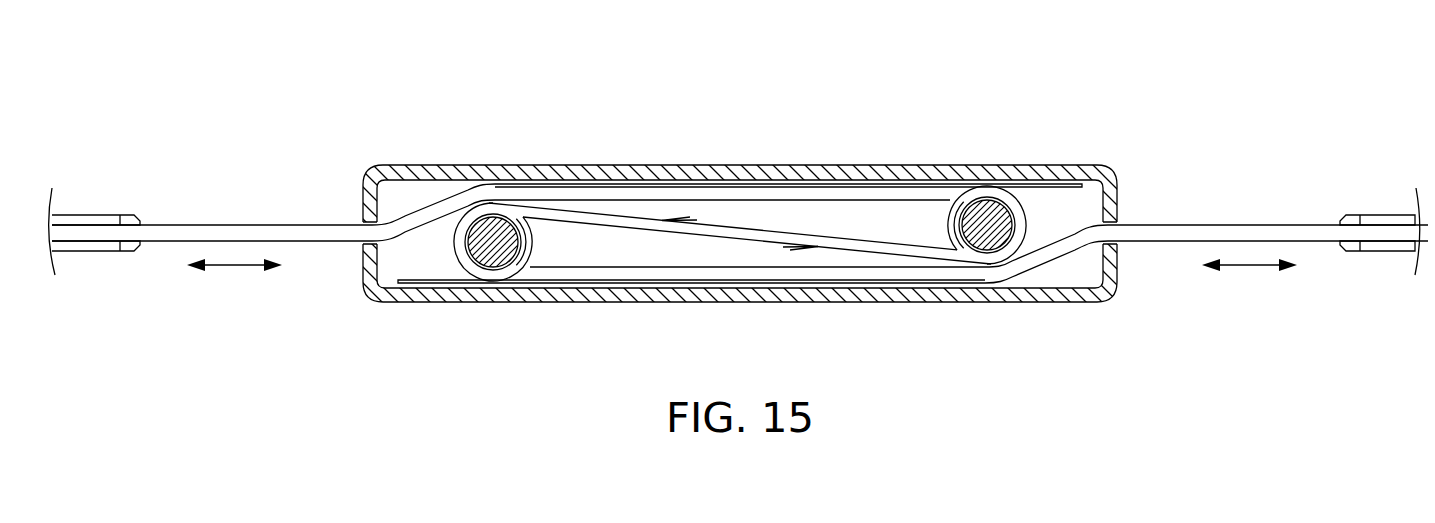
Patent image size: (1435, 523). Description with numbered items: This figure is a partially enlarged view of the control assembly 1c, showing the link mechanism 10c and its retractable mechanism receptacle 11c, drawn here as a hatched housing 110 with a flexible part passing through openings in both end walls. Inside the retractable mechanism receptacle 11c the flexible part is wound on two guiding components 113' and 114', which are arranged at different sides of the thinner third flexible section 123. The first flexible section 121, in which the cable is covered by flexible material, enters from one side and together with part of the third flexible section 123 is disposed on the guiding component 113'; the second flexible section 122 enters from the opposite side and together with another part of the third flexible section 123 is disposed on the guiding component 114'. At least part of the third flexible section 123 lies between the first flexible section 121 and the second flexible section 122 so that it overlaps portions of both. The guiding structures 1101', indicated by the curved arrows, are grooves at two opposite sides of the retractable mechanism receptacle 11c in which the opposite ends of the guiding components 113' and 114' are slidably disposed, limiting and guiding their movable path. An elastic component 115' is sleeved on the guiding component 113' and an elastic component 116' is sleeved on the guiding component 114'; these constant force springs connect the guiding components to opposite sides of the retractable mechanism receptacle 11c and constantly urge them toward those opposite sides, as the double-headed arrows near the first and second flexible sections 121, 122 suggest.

The control assembly 1c is at (181, 47).
The link mechanism 10c is at (338, 110).
The retractable mechanism receptacle 11c is at (826, 146).
The housing body 110 is at (953, 296).
The first flexible section 121 is at (241, 233).
The second flexible section 122 is at (1253, 233).
The third flexible section 123 is at (737, 232).
The guiding component 113' is at (989, 179).
The guiding component 114' is at (490, 294).
The elastic component 115' is at (929, 178).
The elastic component 116' is at (561, 295).
The guiding structure 1101' is at (740, 288).